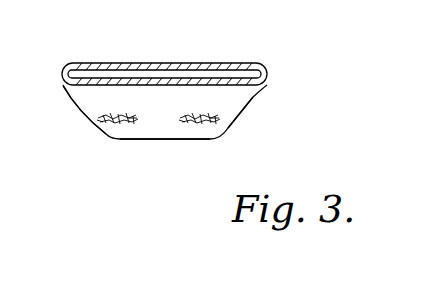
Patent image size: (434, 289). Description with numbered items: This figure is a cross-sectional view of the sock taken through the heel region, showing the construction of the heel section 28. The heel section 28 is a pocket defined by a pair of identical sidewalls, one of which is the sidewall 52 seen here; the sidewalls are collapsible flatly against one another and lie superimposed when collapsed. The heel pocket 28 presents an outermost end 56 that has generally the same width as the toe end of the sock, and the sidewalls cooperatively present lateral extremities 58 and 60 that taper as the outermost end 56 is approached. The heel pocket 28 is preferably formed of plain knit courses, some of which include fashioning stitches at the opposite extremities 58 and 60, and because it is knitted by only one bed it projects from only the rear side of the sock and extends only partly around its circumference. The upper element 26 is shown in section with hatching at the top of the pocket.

The rim 26 is at (157, 63).
The sidewall 52 is at (245, 104).
The lateral extremity 58 is at (84, 118).
The heel section 28 is at (141, 139).
The outermost end 56 is at (190, 139).
The lateral extremity 60 is at (231, 129).